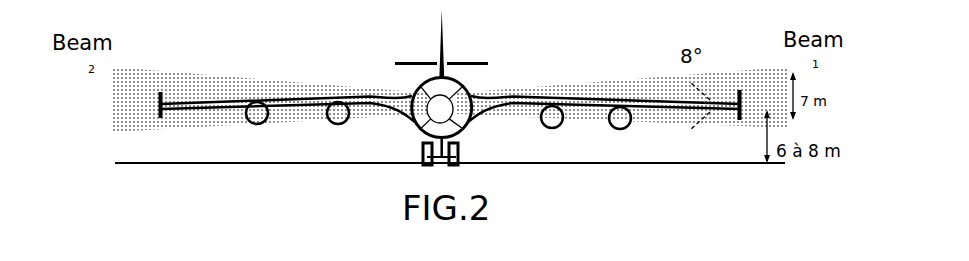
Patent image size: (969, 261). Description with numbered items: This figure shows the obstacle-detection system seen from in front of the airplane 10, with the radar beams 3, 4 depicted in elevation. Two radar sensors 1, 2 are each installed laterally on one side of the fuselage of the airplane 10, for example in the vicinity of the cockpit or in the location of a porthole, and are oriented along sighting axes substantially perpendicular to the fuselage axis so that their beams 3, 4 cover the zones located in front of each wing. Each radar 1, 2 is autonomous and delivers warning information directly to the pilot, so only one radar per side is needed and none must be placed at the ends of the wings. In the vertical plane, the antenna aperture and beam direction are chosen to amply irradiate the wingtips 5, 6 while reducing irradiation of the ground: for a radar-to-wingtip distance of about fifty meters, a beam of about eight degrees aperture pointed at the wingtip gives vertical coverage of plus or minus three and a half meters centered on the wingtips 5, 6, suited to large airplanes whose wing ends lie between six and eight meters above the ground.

The radar sensor 1 is at (444, 86).
The radar sensor 2 is at (392, 83).
The radar beam 3 is at (755, 80).
The radar beam 4 is at (143, 81).
The wingtip 5 is at (171, 113).
The wingtip 6 is at (725, 113).
The airplane 10 is at (467, 124).